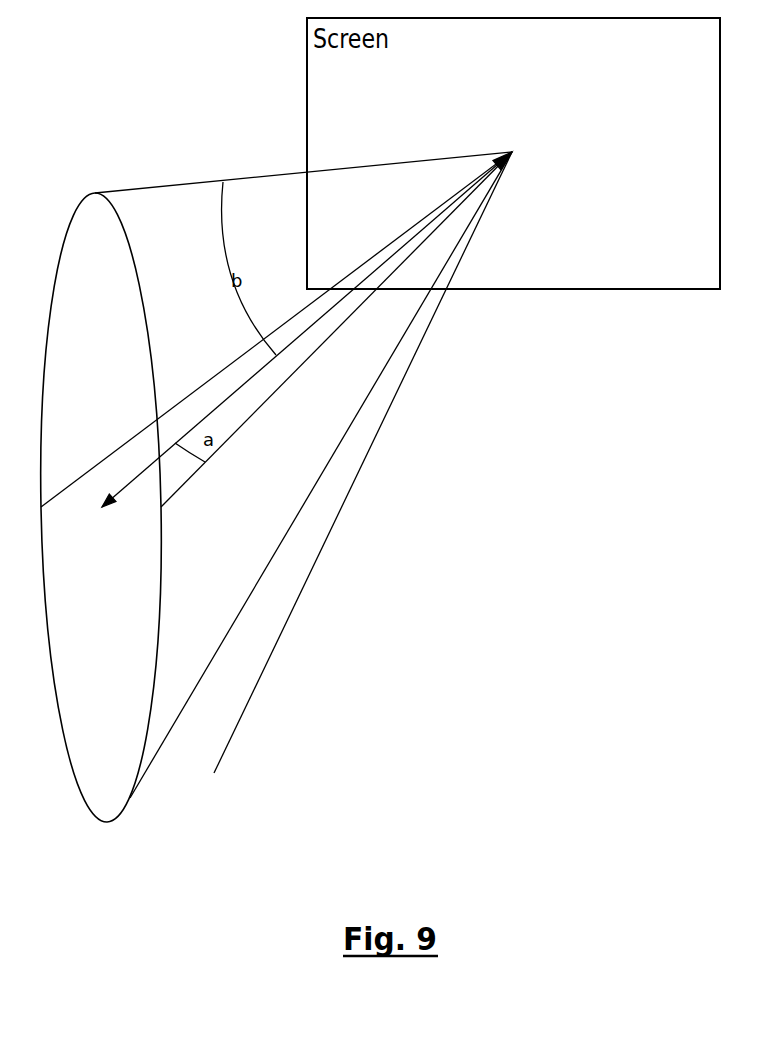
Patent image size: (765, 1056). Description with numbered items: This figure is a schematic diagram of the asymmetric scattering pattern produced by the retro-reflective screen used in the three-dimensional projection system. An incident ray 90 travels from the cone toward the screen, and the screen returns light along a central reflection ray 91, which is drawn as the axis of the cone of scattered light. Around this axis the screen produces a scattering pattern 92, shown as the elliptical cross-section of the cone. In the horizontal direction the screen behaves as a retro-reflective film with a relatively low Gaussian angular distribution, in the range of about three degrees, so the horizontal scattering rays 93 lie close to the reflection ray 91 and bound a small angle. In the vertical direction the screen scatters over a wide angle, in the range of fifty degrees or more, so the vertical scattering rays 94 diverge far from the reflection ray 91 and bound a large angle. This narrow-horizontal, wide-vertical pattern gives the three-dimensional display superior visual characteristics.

The incident ray 90 is at (374, 459).
The reflection ray 91 is at (273, 373).
The scattering pattern 92 is at (59, 788).
The horizontal scattering rays 93 is at (205, 372).
The vertical scattering rays 94 is at (151, 180).